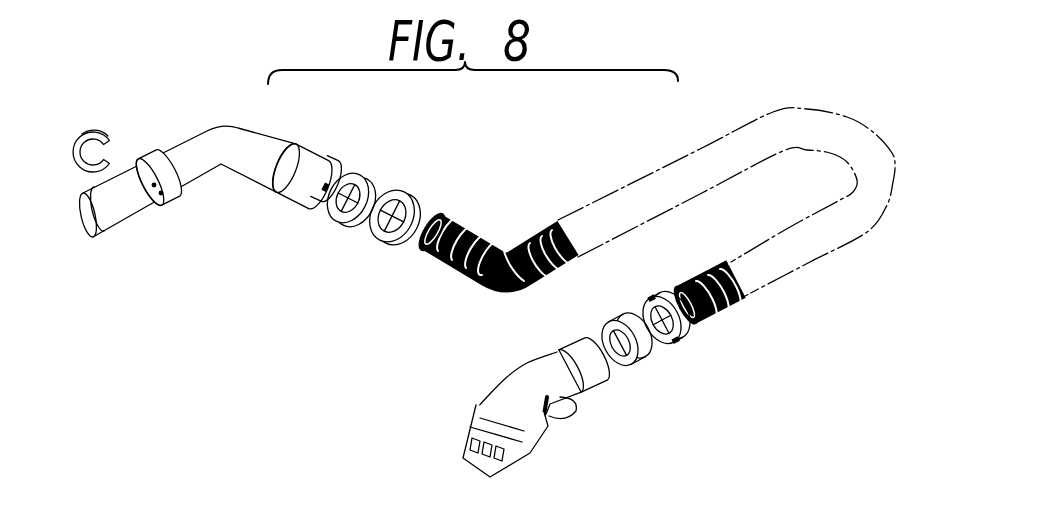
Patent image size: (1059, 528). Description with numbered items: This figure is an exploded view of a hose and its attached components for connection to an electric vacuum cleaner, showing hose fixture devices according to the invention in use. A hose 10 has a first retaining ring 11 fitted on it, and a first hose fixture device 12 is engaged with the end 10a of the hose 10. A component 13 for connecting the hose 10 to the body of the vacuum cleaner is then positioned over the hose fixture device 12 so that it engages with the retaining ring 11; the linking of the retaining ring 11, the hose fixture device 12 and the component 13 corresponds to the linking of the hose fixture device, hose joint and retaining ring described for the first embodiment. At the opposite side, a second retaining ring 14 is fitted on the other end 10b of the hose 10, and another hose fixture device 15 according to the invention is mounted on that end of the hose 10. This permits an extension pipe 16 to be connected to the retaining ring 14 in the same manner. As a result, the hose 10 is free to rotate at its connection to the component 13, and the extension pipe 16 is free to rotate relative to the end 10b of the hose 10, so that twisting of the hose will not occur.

The hose 10 is at (718, 135).
The end of the hose 10a is at (725, 305).
The other end of the hose 10b is at (467, 223).
The first retaining ring 11 is at (677, 347).
The first hose fixture device 12 is at (632, 367).
The component 13 is at (500, 383).
The second retaining ring 14 is at (413, 190).
The hose fixture device 15 is at (365, 172).
The extension pipe 16 is at (178, 142).